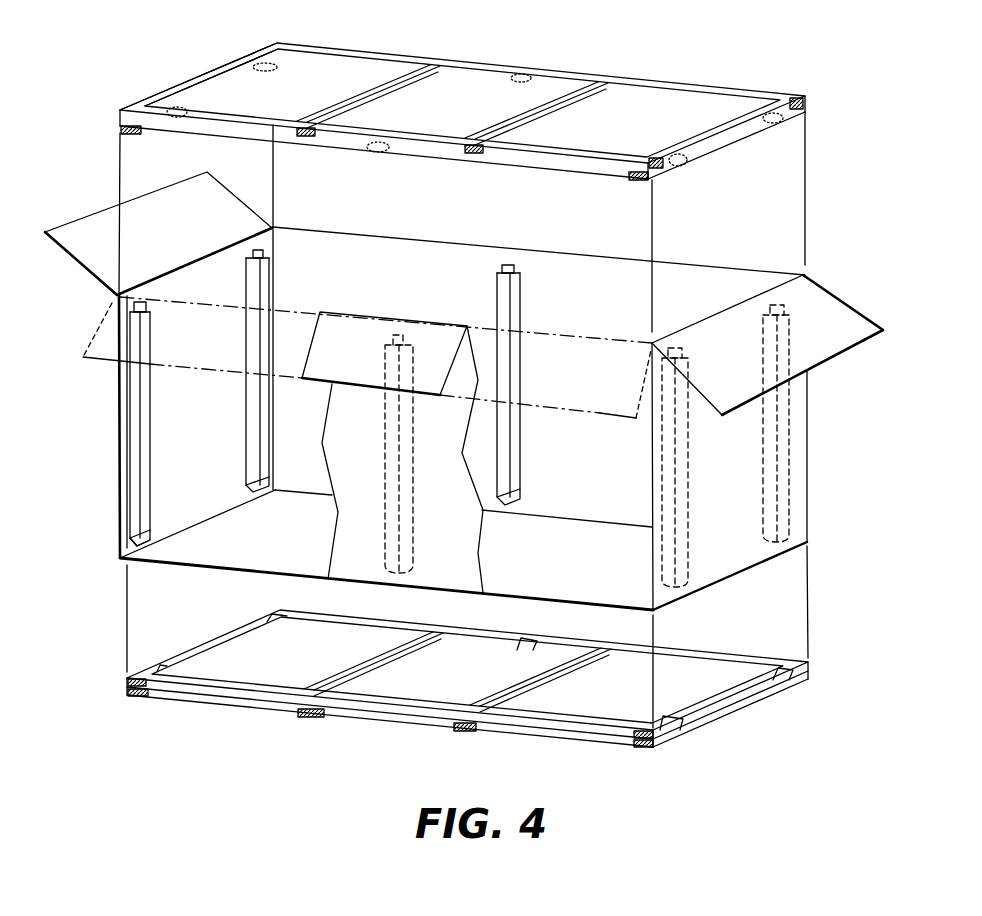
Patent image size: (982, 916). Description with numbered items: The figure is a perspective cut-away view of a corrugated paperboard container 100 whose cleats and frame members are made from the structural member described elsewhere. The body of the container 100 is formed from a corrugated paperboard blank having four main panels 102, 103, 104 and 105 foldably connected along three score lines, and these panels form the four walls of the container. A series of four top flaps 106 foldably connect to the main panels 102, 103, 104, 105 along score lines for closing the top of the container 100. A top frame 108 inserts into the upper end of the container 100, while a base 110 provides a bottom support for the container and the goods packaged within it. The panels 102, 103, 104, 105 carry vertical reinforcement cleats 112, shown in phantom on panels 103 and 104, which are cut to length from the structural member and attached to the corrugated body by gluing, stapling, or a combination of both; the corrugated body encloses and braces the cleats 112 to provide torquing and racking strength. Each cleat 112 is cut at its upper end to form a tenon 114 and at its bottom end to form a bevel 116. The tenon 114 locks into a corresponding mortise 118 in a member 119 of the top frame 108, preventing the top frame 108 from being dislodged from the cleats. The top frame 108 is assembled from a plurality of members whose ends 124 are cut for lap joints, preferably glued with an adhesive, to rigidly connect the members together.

The corrugated paperboard container 100 is at (104, 468).
The main panel 102 is at (219, 412).
The main panel 103 is at (466, 545).
The main panel 104 is at (749, 495).
The main panel 105 is at (596, 302).
The top flaps 106 is at (189, 236).
The top frame 108 is at (119, 109).
The base 110 is at (118, 682).
The vertical reinforcement cleats 112 is at (145, 470).
The tenon 114 is at (148, 304).
The bevel 116 is at (148, 537).
The mortise 118 is at (181, 118).
The member of the top frame 119 is at (221, 74).
The ends 124 is at (805, 105).